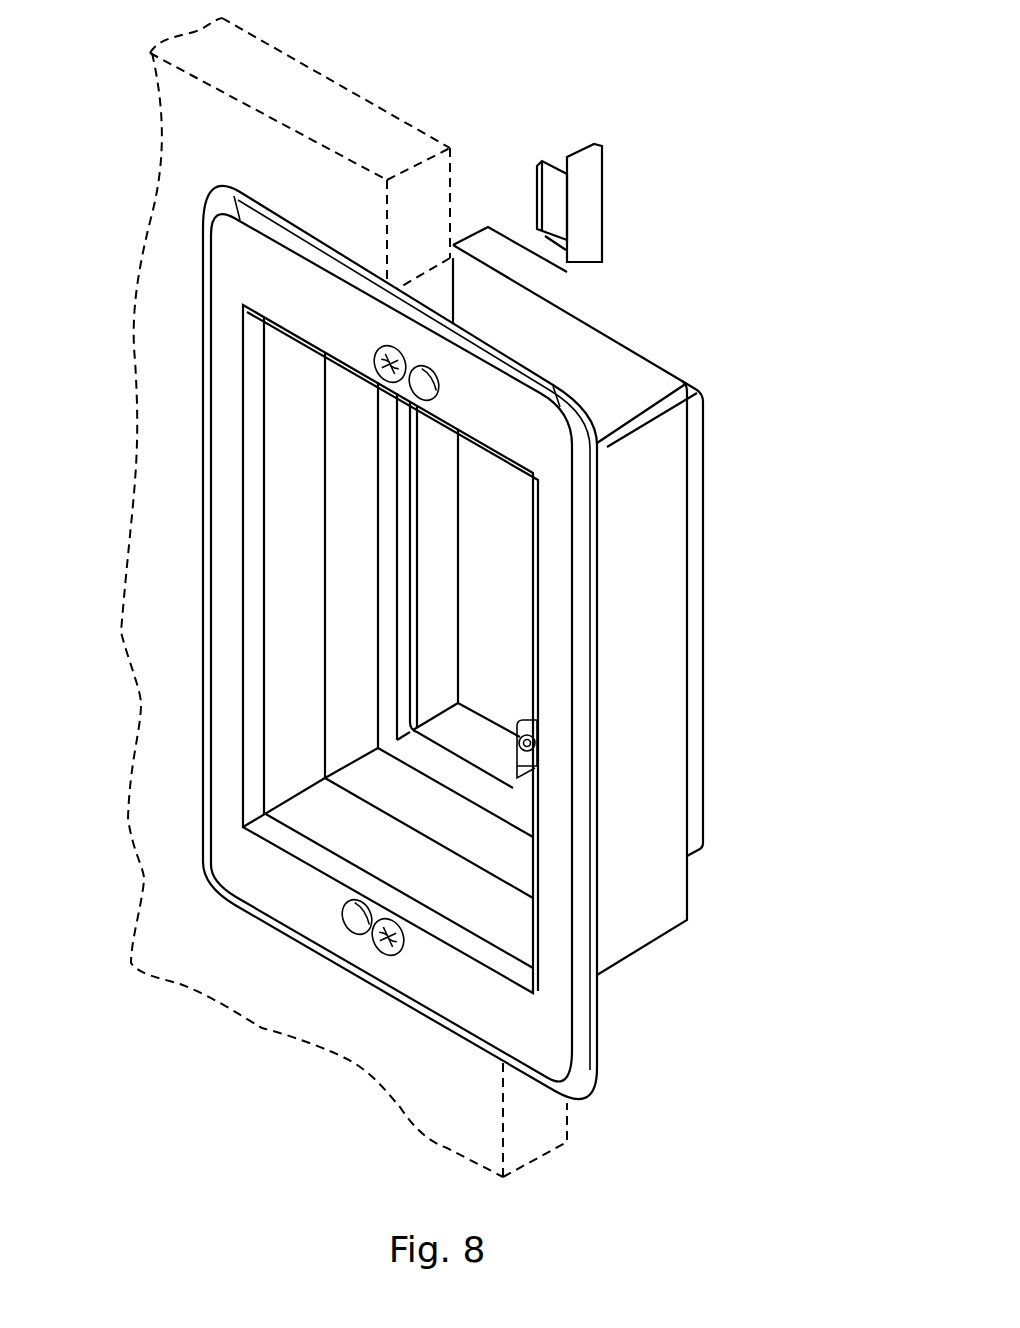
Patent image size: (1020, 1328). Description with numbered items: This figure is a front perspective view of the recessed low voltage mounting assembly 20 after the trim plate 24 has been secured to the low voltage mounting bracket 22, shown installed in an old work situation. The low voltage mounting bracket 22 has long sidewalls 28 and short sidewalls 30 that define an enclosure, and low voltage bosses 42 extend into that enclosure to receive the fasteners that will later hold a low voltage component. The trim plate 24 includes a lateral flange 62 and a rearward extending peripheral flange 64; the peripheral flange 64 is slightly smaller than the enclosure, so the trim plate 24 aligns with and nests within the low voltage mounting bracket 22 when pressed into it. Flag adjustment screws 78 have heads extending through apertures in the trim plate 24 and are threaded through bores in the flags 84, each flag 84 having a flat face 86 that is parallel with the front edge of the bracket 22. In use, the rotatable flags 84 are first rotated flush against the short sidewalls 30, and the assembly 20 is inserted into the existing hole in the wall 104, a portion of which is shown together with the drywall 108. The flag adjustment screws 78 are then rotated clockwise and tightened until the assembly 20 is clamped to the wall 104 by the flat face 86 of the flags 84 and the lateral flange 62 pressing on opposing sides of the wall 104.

The recessed low voltage mounting assembly 20 is at (176, 333).
The low voltage mounting bracket 22 is at (627, 363).
The trim plate 24 is at (557, 753).
The long sidewalls 28 is at (654, 629).
The short sidewalls 30 is at (471, 298).
The low voltage bosses 42 is at (522, 722).
The lateral flange 62 is at (521, 425).
The rearward extending peripheral flange 64 is at (311, 562).
The flag adjustment screws 78 is at (378, 376).
The flags 84 is at (606, 200).
The flat face 86 is at (547, 200).
The wall 104 is at (210, 163).
The drywall 108 is at (357, 153).